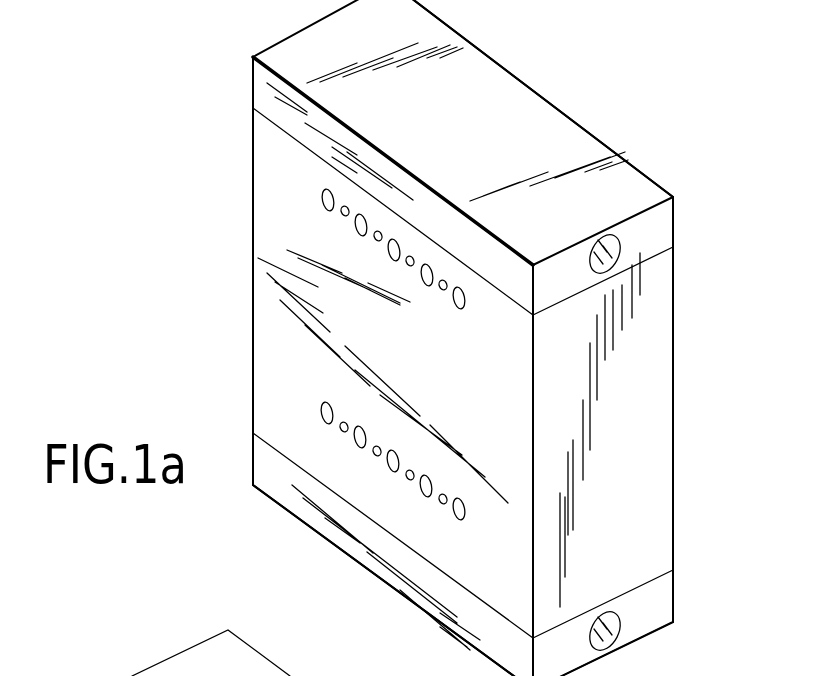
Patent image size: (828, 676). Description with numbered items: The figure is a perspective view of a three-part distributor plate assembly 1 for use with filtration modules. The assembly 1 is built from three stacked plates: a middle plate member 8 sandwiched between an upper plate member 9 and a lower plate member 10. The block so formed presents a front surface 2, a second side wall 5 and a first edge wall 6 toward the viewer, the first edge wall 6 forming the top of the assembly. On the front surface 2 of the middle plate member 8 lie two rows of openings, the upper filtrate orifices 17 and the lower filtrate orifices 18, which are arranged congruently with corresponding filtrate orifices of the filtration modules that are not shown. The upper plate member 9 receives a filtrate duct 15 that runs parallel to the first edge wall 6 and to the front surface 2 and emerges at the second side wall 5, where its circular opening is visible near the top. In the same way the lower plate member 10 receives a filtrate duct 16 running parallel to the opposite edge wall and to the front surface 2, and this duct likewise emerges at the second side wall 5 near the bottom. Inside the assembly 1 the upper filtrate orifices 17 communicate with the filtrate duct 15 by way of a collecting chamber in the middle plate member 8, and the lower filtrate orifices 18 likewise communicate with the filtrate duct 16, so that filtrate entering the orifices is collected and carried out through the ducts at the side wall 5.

The distributor plate assembly 1 is at (712, 324).
The front surface 2 is at (267, 273).
The second side wall 5 is at (668, 438).
The first edge wall 6 is at (561, 120).
The middle plate member 8 is at (246, 336).
The upper plate member 9 is at (471, 36).
The lower plate member 10 is at (320, 543).
The filtrate duct 15 is at (613, 247).
The filtrate duct 16 is at (603, 642).
The upper filtrate orifices 17 is at (340, 210).
The lower filtrate orifices 18 is at (342, 431).